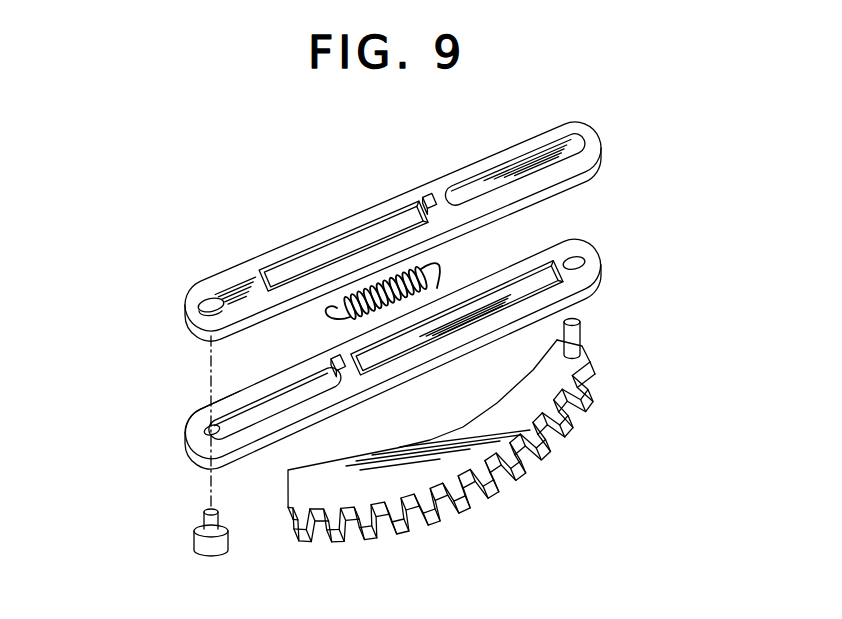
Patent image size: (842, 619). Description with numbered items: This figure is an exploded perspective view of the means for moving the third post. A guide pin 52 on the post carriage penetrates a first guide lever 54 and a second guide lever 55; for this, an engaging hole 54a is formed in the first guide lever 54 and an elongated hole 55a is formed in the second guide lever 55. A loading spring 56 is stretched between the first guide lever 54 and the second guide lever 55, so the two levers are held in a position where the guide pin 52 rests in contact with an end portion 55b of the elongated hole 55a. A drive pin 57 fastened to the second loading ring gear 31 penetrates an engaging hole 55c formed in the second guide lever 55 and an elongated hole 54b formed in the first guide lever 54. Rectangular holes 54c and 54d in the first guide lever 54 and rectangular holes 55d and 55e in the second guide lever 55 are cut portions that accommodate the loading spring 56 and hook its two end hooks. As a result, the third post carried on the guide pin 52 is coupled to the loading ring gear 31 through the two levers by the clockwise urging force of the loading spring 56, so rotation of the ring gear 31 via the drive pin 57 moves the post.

The second loading ring gear 31 is at (430, 477).
The guide pin 52 is at (193, 551).
The first guide lever 54 is at (293, 240).
The engaging hole 54a is at (204, 303).
The elongated hole 54b is at (587, 137).
The rectangular hole 54c is at (437, 199).
The rectangular hole 54d is at (277, 281).
The second guide lever 55 is at (390, 372).
The elongated hole 55a is at (249, 452).
The end portion 55b is at (203, 428).
The engaging hole 55c is at (582, 260).
The rectangular hole 55d is at (527, 290).
The rectangular hole 55e is at (336, 370).
The loading spring 56 is at (440, 288).
The drive pin 57 is at (580, 338).